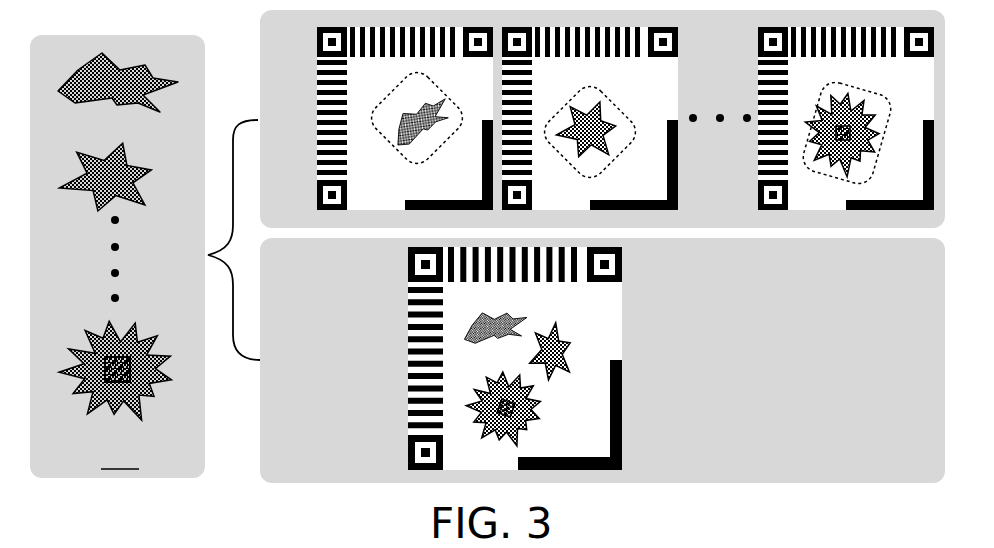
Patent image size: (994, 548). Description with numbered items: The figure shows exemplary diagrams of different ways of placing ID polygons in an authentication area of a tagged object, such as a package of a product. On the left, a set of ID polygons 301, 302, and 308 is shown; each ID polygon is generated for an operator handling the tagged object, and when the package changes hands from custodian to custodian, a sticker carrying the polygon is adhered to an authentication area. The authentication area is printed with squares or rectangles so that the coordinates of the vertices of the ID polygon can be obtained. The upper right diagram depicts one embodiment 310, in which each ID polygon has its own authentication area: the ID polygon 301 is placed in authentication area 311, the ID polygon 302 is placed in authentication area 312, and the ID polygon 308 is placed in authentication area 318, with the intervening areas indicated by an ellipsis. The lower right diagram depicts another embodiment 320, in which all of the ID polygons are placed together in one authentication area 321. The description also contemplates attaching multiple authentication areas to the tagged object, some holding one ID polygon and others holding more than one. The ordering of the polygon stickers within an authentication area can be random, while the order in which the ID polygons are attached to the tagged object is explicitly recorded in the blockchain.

The ID polygon 301 is at (150, 80).
The ID polygon 302 is at (148, 188).
The ID polygon 308 is at (150, 350).
The embodiment 310 is at (306, 198).
The authentication area 311 is at (477, 193).
The authentication area 312 is at (659, 196).
The authentication area 318 is at (924, 196).
The embodiment 320 is at (304, 448).
The authentication area 321 is at (597, 446).